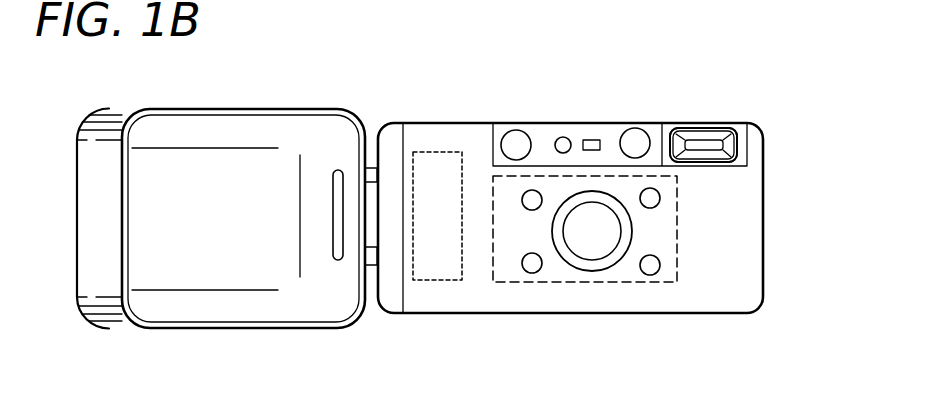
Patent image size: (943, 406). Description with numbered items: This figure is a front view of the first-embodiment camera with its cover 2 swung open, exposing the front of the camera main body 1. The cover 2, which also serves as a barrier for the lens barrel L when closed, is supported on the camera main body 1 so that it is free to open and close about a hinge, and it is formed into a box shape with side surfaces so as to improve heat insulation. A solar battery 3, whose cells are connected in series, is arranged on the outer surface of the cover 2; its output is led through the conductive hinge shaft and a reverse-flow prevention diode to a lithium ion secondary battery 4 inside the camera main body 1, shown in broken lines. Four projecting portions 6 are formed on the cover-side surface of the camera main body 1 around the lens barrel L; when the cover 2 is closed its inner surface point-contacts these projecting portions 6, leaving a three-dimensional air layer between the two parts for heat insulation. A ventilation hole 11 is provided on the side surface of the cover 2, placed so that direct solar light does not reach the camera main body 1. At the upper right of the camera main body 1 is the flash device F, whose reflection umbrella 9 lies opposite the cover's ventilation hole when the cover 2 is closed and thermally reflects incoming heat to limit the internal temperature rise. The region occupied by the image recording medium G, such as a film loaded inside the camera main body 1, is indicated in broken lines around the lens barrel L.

The camera main body 1 is at (755, 215).
The cover 2 is at (107, 120).
The solar battery 3 is at (523, 0).
The lithium ion secondary battery 4 is at (442, 160).
The projecting portions 6 is at (658, 203).
The reflection umbrella 9 is at (695, 135).
The ventilation hole 11 is at (330, 168).
The lens barrel L is at (590, 213).
The flash device F is at (733, 125).
The image recording medium G is at (680, 183).